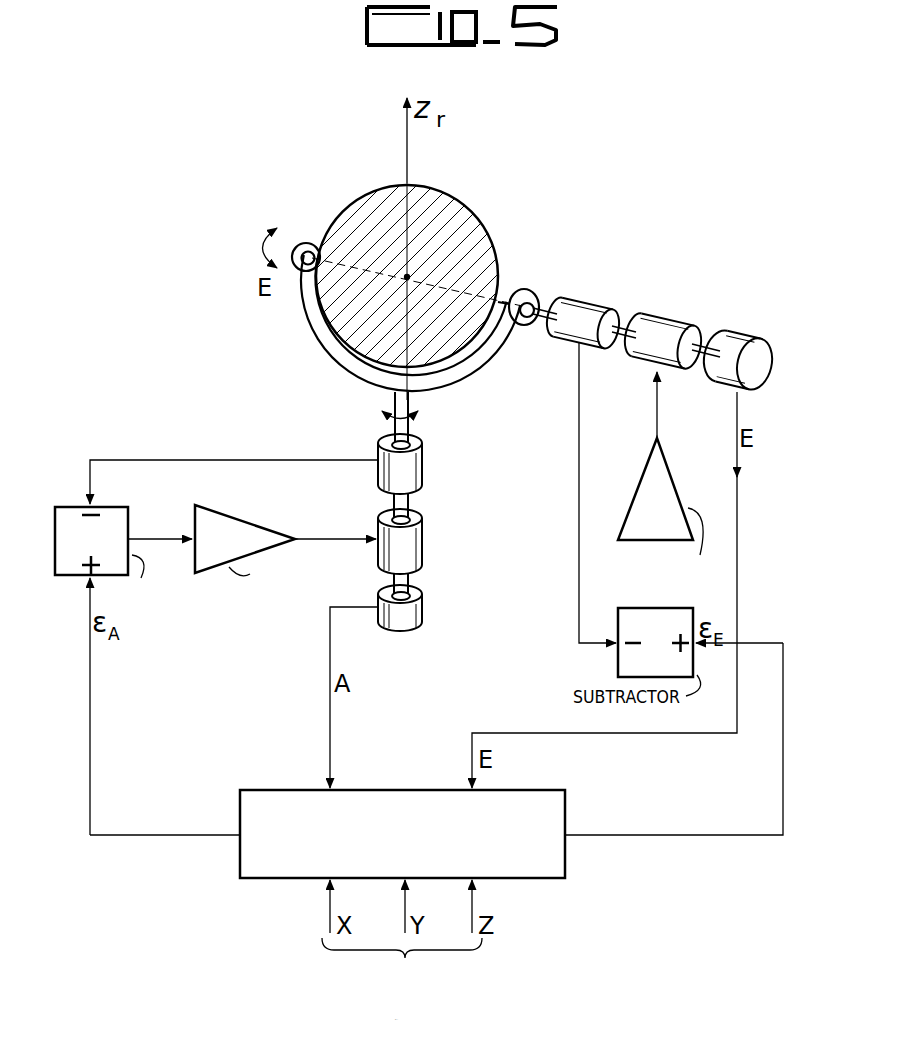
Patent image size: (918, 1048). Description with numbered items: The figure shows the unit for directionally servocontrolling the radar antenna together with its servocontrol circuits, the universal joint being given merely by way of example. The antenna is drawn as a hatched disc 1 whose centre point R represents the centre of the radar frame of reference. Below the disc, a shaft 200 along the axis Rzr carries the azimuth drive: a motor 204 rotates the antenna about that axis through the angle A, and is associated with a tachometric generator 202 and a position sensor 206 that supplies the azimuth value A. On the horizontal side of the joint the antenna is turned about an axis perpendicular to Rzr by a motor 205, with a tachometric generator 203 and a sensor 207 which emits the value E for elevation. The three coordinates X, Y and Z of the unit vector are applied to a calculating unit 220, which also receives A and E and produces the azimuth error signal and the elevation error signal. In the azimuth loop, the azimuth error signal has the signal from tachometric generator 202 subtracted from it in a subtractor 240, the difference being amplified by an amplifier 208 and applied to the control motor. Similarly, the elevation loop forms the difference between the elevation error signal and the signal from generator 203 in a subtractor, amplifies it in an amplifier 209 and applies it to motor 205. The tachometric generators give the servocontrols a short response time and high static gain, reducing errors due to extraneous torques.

The rotating disc 1 is at (362, 197).
The azimuth axis shaft 200 is at (394, 426).
The tachometric generator 202 is at (420, 467).
The motor 204 is at (420, 547).
The position sensor 206 is at (420, 612).
The tachometric generator 203 is at (592, 302).
The motor 205 is at (672, 320).
The sensor 207 is at (742, 336).
The amplifier 208 is at (268, 520).
The amplifier 209 is at (645, 476).
The subtractor 240 is at (118, 484).
The calculating unit 220 is at (268, 790).